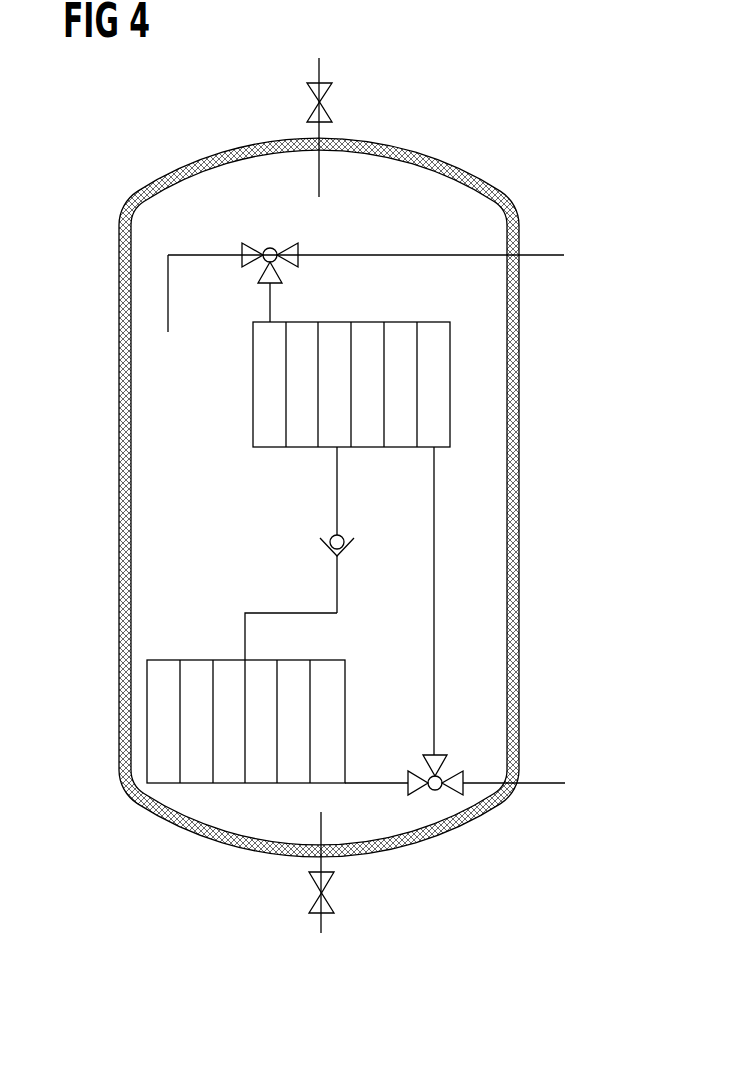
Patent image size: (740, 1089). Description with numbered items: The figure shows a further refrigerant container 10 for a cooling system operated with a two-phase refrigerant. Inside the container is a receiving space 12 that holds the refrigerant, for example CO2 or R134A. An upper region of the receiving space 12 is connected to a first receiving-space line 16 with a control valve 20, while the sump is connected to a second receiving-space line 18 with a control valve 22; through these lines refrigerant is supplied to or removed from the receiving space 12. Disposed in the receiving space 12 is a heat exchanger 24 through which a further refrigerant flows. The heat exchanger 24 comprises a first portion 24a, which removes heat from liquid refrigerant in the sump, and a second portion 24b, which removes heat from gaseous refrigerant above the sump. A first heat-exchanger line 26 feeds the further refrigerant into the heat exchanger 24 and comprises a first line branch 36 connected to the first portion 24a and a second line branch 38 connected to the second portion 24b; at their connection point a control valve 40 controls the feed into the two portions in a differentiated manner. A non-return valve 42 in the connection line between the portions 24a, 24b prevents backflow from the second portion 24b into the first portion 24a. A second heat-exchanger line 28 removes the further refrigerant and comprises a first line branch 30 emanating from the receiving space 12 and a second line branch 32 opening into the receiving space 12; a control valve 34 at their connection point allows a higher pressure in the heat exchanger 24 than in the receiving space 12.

The refrigerant container 10 is at (350, 497).
The receiving space 12 is at (148, 263).
The first receiving-space line 16 is at (319, 130).
The second receiving-space line 18 is at (320, 921).
The control valve 20 is at (326, 96).
The control valve 22 is at (336, 896).
The heat exchanger 24 is at (296, 552).
The first portion of the heat exchanger 24a is at (197, 662).
The second portion of the heat exchanger 24b is at (262, 386).
The first heat-exchanger line 26 is at (543, 782).
The second heat-exchanger line 28 is at (272, 306).
The first line branch 30 is at (543, 254).
The second line branch 32 is at (170, 310).
The control valve 34 is at (268, 243).
The first line branch 36 is at (358, 782).
The second line branch 38 is at (432, 632).
The control valve 40 is at (428, 790).
The non-return valve 42 is at (343, 551).